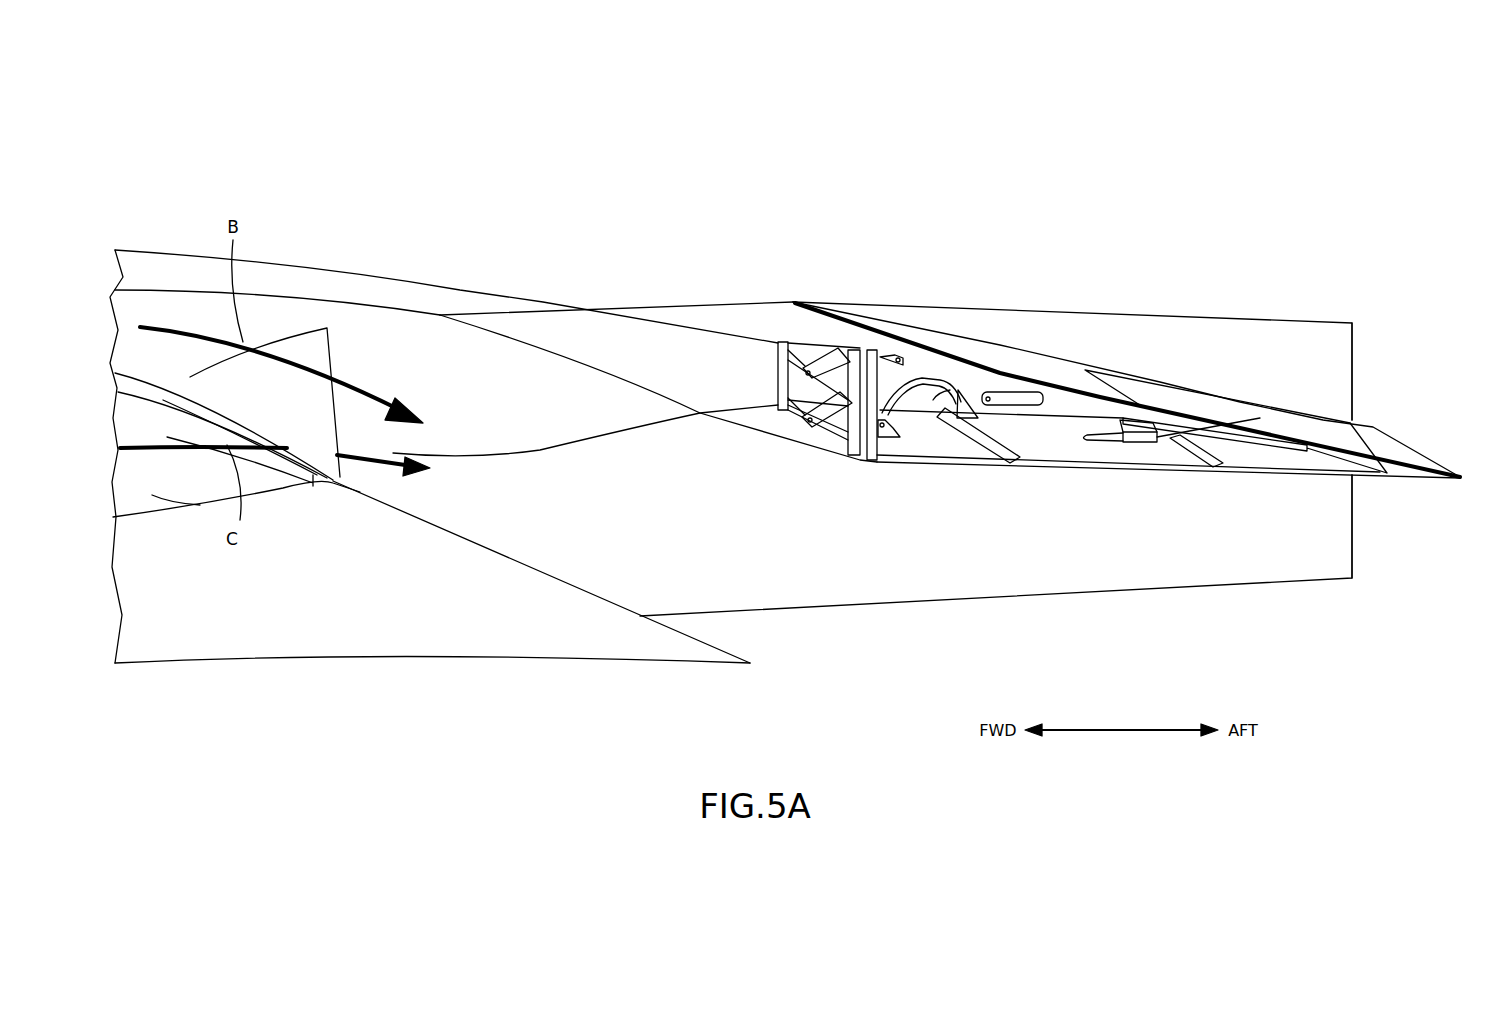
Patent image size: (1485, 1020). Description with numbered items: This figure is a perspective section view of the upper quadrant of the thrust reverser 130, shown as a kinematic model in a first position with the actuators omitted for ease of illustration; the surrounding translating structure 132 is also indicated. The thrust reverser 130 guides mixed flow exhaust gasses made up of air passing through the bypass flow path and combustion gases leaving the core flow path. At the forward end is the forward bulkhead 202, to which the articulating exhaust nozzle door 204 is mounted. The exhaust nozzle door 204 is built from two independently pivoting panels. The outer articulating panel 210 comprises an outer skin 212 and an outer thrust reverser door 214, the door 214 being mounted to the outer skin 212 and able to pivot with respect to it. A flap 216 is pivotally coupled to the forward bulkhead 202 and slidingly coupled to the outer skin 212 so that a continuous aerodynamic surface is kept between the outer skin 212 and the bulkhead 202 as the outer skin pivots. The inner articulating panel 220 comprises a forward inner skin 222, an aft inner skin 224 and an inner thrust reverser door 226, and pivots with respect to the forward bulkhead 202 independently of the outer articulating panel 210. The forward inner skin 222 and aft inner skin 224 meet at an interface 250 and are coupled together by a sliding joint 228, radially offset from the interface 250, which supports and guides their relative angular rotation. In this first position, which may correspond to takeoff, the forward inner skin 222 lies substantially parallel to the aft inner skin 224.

The thrust reverser 130 is at (1114, 212).
The translating sleeve 132 is at (1305, 383).
The forward bulkhead 202 is at (862, 357).
The exhaust nozzle door 204 is at (1117, 348).
The outer articulating panel 210 is at (1047, 357).
The outer skin 212 is at (990, 357).
The outer thrust reverser door 214 is at (1235, 413).
The flap 216 is at (862, 327).
The inner articulating panel 220 is at (1150, 472).
The forward inner skin 222 is at (918, 453).
The aft inner skin 224 is at (1063, 455).
The inner thrust reverser door 226 is at (1280, 465).
The sliding joint 228 is at (955, 385).
The interface 250 is at (1008, 463).